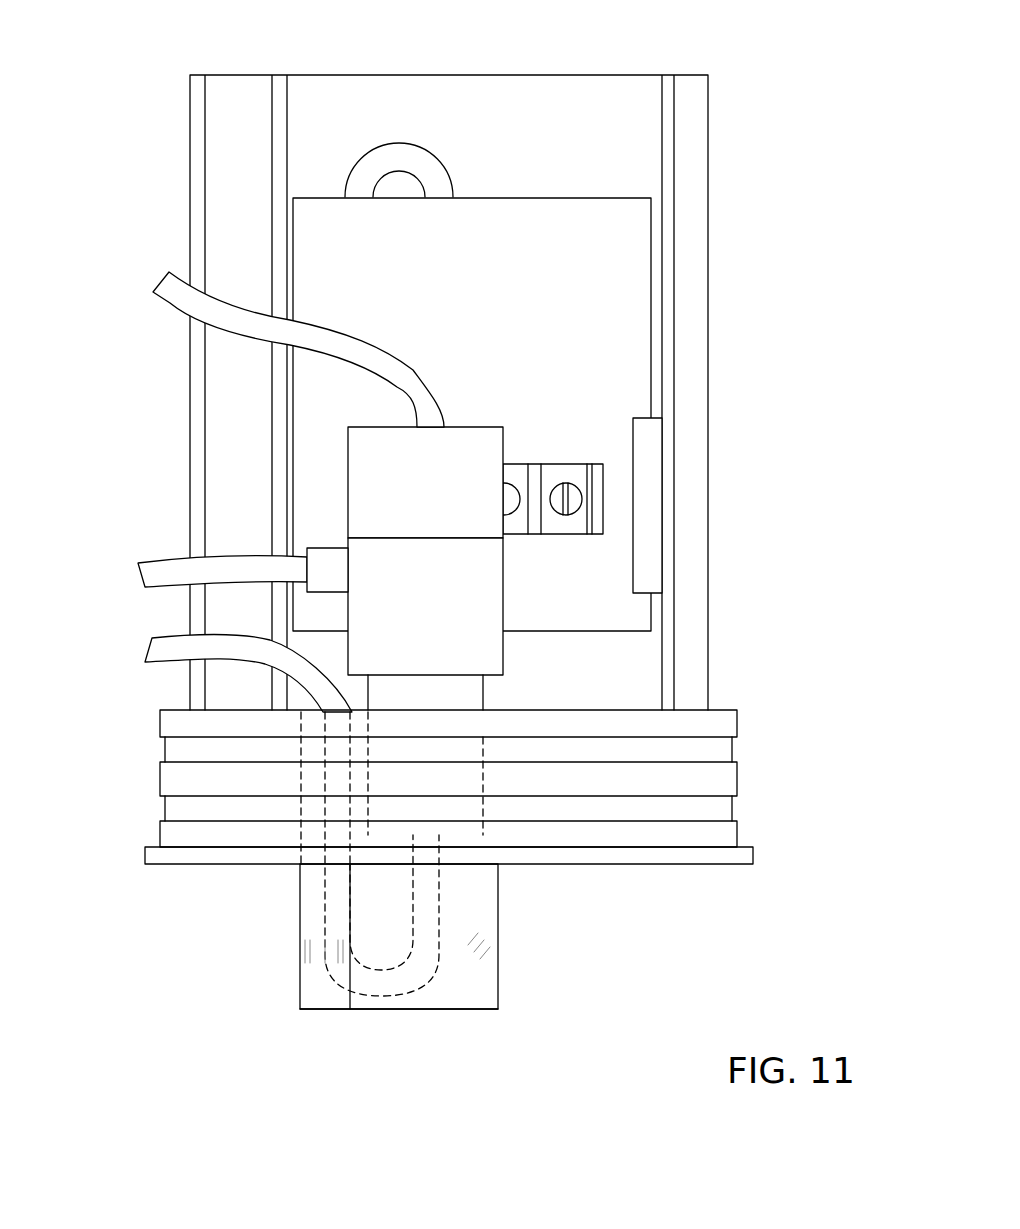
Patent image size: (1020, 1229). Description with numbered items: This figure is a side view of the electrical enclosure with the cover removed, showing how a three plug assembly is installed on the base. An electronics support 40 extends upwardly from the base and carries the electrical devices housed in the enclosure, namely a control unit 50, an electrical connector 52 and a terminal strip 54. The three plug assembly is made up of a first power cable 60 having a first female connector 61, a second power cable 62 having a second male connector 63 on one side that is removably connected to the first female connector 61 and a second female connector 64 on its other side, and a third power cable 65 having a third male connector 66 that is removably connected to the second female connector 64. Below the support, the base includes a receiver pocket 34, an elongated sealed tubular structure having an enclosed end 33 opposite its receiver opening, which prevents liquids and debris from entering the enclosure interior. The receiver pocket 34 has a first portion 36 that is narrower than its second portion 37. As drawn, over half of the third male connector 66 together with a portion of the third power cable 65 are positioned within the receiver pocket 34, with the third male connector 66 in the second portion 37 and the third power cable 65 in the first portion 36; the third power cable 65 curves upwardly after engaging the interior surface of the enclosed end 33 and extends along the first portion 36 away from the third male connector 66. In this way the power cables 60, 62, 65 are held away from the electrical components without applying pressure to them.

The enclosed end 33 is at (399, 1047).
The receiver pocket 34 is at (422, 975).
The first portion 36 is at (307, 908).
The second portion 37 is at (462, 921).
The electronics support 40 is at (398, 100).
The control unit 50 is at (578, 243).
The electrical connector 52 is at (567, 464).
The terminal strip 54 is at (647, 453).
The first power cable 60 is at (182, 300).
The first female connector 61 is at (373, 480).
The second power cable 62 is at (160, 577).
The second male connector 63 is at (490, 548).
The second female connector 64 is at (490, 655).
The third power cable 65 is at (158, 655).
The third male connector 66 is at (467, 695).